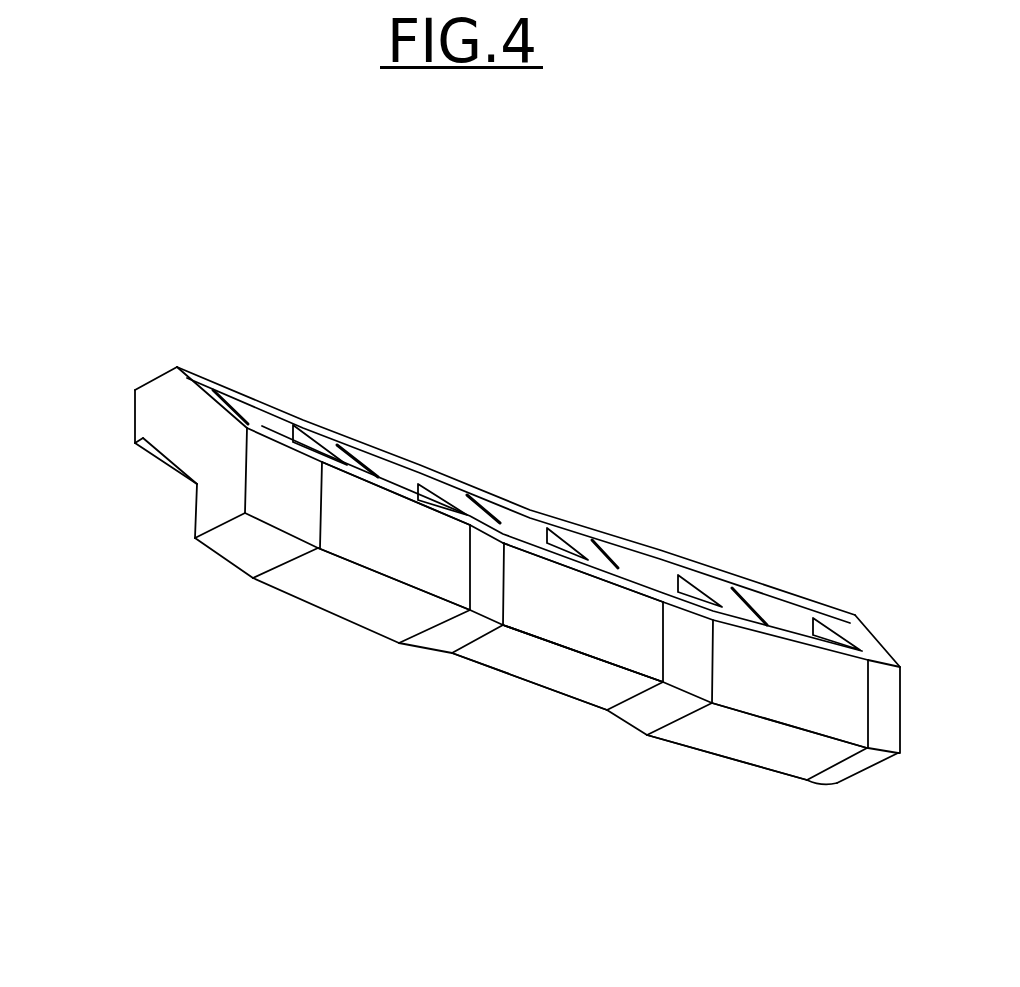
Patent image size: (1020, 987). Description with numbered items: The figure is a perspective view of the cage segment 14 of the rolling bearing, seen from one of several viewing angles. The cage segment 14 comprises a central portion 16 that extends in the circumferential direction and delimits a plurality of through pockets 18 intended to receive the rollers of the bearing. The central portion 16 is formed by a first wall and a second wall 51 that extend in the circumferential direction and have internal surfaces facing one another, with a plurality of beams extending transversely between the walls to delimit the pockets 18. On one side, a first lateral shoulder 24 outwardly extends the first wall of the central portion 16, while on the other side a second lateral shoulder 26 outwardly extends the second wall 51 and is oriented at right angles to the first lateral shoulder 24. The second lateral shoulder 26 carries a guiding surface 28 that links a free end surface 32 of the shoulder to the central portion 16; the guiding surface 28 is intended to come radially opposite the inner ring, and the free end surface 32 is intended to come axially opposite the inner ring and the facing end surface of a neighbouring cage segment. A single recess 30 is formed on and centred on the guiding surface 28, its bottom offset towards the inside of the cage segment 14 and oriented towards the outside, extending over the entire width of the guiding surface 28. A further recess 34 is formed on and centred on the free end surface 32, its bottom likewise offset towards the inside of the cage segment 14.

The cage segment 14 is at (528, 443).
The central portion 16 is at (167, 439).
The through pockets 18 is at (655, 575).
The first lateral shoulder 24 is at (136, 416).
The second lateral shoulder 26 is at (198, 505).
The guiding surface 28 is at (370, 528).
The recess 30 is at (562, 595).
The free end surface 32 is at (745, 742).
The recess 34 is at (540, 660).
The second wall 51 is at (790, 640).